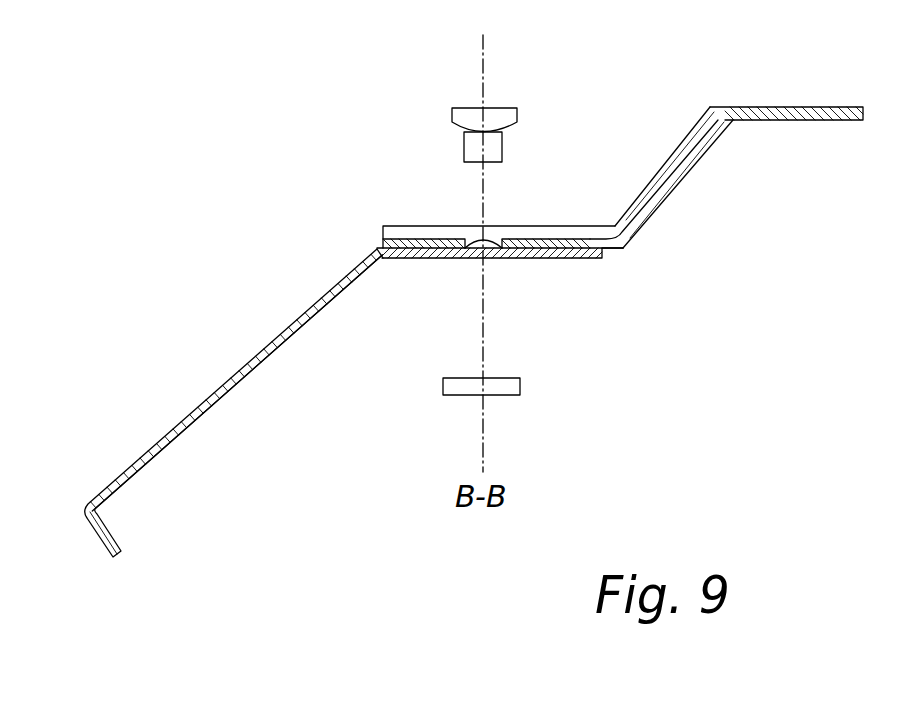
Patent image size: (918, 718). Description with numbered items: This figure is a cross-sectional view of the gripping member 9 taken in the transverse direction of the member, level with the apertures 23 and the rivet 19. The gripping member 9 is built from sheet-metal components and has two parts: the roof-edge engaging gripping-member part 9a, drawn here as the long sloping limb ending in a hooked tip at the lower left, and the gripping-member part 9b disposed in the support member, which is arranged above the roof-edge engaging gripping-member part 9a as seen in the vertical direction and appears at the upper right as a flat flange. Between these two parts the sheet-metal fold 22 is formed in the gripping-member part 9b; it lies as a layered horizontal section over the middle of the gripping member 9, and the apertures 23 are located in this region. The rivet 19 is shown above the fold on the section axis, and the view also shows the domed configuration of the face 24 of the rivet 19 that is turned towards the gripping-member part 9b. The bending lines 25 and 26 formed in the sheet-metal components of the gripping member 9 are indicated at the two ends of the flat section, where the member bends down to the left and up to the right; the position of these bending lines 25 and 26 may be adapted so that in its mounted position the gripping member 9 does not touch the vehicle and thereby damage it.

The rivet 19 is at (524, 94).
The face of the rivet 24 is at (517, 120).
The sheet-metal fold 22 is at (383, 242).
The apertures 23 is at (493, 252).
The bending line 25 is at (378, 257).
The bending line 26 is at (617, 250).
The gripping member 9 is at (474, 332).
The roof-edge engaging gripping-member part 9a is at (158, 448).
The gripping-member part disposed in the support member 9b is at (757, 122).